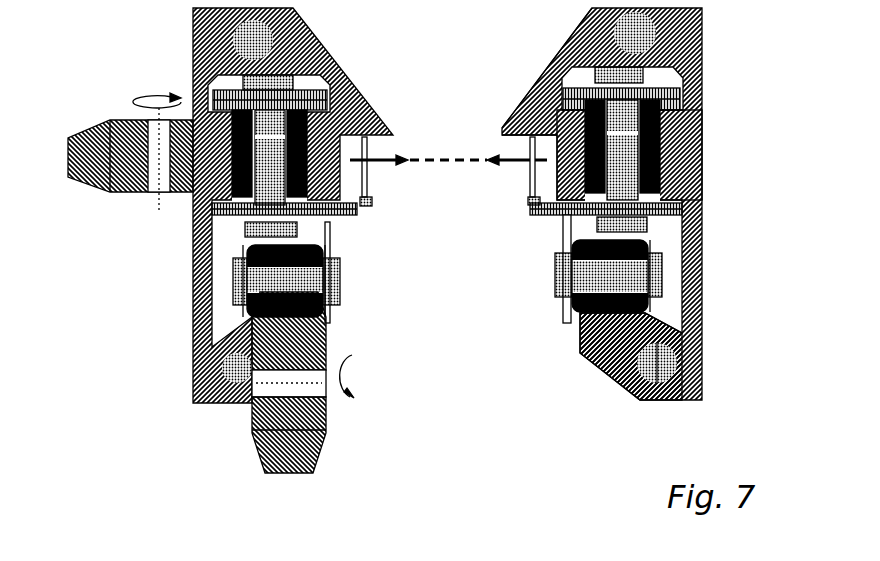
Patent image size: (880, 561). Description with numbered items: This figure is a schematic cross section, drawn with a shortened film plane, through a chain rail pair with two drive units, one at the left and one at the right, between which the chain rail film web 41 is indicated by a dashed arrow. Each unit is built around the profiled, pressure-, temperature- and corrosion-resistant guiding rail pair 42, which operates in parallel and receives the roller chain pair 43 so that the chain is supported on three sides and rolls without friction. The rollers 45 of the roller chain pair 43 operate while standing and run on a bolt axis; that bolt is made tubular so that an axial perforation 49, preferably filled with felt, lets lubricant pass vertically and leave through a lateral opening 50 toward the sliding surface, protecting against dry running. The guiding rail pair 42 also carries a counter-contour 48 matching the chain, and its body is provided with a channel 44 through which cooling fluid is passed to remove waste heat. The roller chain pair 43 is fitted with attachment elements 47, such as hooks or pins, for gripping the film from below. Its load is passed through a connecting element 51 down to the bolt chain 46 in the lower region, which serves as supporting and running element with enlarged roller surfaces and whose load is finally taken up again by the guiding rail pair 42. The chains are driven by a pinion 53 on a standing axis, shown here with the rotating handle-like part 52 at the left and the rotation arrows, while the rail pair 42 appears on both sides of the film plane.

The chain rail film web 41 is at (413, 153).
The guiding rail pair 42 is at (573, 37).
The roller chain pair 43 is at (697, 187).
The channel 44 is at (690, 342).
The roller 45 is at (680, 147).
The bolt chain 46 is at (657, 270).
The attachment element 47 is at (527, 200).
The counter-contour 48 is at (525, 105).
The axial perforation 49 is at (653, 63).
The lateral opening 50 is at (667, 113).
The connecting element 51 is at (560, 233).
The handle 52 is at (170, 195).
The engaging pinion / standing axis 53 is at (253, 417).